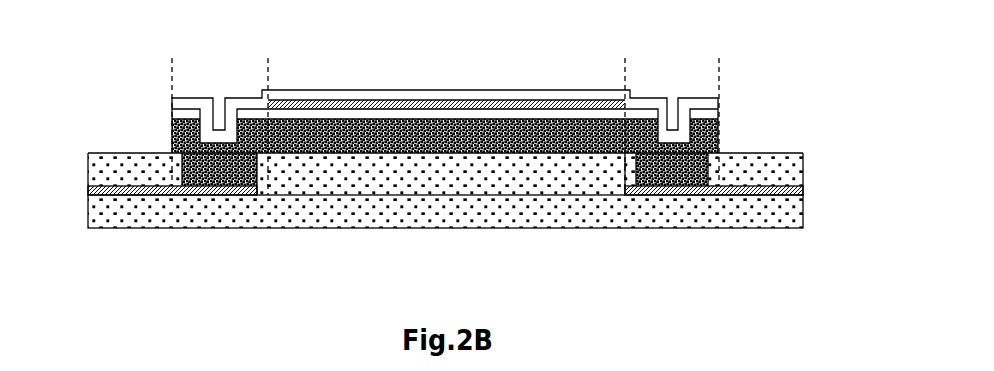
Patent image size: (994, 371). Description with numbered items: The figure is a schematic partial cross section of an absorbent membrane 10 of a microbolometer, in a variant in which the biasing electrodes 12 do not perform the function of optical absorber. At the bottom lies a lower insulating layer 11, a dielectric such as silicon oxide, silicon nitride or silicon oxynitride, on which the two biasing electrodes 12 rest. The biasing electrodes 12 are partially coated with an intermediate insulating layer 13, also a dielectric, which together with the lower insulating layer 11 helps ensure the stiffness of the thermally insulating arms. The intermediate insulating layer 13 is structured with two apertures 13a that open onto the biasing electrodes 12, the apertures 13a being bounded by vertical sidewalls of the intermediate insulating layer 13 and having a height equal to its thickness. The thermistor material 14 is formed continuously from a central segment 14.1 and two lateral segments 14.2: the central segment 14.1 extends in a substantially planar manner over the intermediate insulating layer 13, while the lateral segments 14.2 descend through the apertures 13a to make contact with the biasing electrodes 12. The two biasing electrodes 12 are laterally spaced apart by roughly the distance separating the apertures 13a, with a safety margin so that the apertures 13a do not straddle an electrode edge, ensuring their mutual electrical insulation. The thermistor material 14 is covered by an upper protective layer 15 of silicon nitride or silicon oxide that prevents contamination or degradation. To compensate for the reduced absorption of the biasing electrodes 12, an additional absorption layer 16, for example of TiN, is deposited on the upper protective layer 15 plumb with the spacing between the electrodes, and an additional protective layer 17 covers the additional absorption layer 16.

The absorbent membrane 10 is at (99, 103).
The lower insulating layer 11 is at (815, 214).
The biasing electrodes 12 is at (176, 206).
The intermediate insulating layer 13 is at (815, 170).
The apertures 13a is at (193, 163).
The thermistor material 14 is at (525, 106).
The central segment 14.1 is at (452, 140).
The lateral segments 14.2 is at (220, 170).
The upper protective layer 15 is at (733, 115).
The additional absorption layer 16 is at (335, 90).
The additional protective layer 17 is at (733, 101).